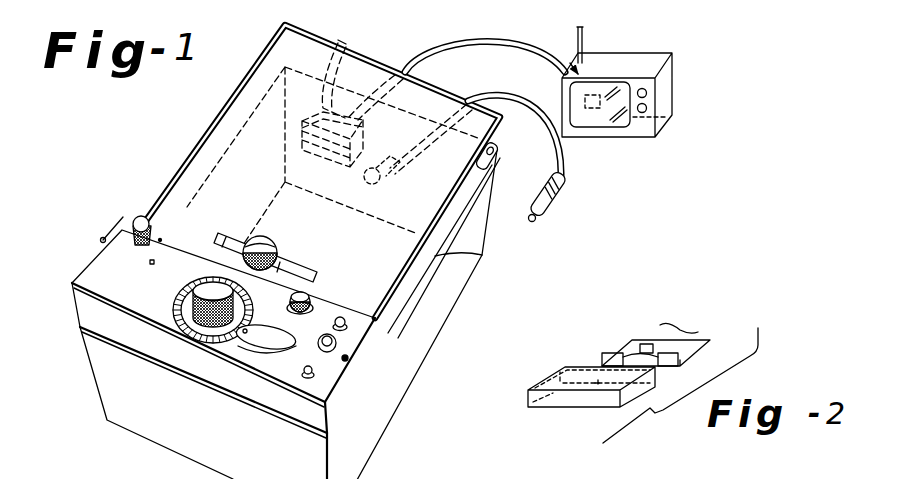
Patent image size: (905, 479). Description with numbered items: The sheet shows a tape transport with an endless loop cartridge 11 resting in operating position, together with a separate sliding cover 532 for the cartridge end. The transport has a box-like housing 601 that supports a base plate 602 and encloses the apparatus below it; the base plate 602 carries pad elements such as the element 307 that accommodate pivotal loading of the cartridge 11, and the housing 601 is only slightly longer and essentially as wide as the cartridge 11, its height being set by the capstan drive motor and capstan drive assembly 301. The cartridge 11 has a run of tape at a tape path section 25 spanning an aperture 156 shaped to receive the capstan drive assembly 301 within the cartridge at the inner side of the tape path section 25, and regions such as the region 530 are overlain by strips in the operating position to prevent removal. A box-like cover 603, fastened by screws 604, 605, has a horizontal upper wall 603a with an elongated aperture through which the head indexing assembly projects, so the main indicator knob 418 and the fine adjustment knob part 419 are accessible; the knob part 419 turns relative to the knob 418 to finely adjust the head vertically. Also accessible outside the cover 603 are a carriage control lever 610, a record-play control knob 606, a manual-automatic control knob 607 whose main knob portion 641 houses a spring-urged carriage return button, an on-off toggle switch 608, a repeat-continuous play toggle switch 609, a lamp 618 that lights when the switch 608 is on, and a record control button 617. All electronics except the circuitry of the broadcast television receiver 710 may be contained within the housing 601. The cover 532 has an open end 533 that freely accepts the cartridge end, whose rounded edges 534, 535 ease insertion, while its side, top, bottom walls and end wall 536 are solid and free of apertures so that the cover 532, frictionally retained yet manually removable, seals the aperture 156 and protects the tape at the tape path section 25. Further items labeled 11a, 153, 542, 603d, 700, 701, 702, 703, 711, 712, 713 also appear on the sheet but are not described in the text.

In FIG. 1, the cartridge 11 is at (206, 127).
In FIG. 2, the cartridge 11 is at (718, 348).
In FIG. 1, the lid rim 11a is at (412, 267).
In FIG. 2, the tape path section 25 is at (640, 352).
In FIG. 2, the contact pad 153 is at (673, 347).
In FIG. 1, the aperture 156 is at (310, 267).
In FIG. 2, the aperture 156 is at (633, 357).
In FIG. 1, the capstan drive assembly 301 is at (258, 250).
In FIG. 1, the pad element 307 is at (493, 157).
In FIG. 1, the indicator knob 418 is at (180, 309).
In FIG. 1, the knob part 419 is at (211, 283).
In FIG. 2, the region of cartridge 530 is at (610, 352).
In FIG. 2, the cover 532 is at (647, 392).
In FIG. 2, the open end 533 is at (592, 398).
In FIG. 2, the cartridge edge 534 is at (600, 357).
In FIG. 2, the cartridge edge 535 is at (707, 342).
In FIG. 2, the end wall 536 is at (563, 407).
In FIG. 2, the sensor assembly 542 is at (668, 403).
In FIG. 1, the housing 601 is at (373, 427).
In FIG. 1, the base plate 602 is at (478, 268).
In FIG. 1, the cover 603 is at (125, 328).
In FIG. 1, the horizontal upper wall 603a is at (257, 368).
In FIG. 1, the lower lip 603d is at (258, 400).
In FIG. 1, the screw 604 is at (100, 240).
In FIG. 1, the screw 605 is at (348, 358).
In FIG. 1, the record-play control knob 606 is at (140, 217).
In FIG. 1, the manual-automatic control knob 607 is at (376, 276).
In FIG. 1, the on-off toggle switch 608 is at (308, 377).
In FIG. 1, the repeat-continuous play toggle switch 609 is at (357, 302).
In FIG. 1, the carriage control lever 610 is at (243, 341).
In FIG. 1, the record control button 617 is at (150, 263).
In FIG. 1, the lamp 618 is at (330, 352).
In FIG. 1, the main knob portion 641 is at (303, 300).
In FIG. 1, the plug 700 is at (560, 203).
In FIG. 1, the plug tip 701 is at (540, 222).
In FIG. 1, the cable 702 is at (563, 165).
In FIG. 1, the connector 703 is at (387, 177).
In FIG. 1, the broadcast television receiver 710 is at (667, 87).
In FIG. 1, the display screen 711 is at (627, 123).
In FIG. 1, the cable 712 is at (490, 44).
In FIG. 1, the cable 713 is at (341, 42).